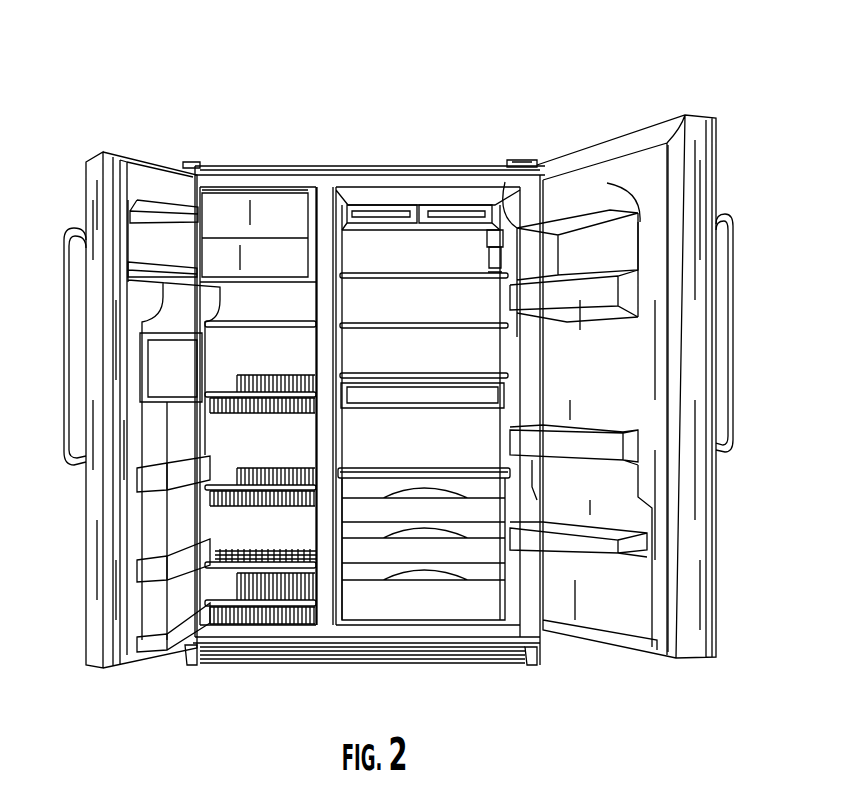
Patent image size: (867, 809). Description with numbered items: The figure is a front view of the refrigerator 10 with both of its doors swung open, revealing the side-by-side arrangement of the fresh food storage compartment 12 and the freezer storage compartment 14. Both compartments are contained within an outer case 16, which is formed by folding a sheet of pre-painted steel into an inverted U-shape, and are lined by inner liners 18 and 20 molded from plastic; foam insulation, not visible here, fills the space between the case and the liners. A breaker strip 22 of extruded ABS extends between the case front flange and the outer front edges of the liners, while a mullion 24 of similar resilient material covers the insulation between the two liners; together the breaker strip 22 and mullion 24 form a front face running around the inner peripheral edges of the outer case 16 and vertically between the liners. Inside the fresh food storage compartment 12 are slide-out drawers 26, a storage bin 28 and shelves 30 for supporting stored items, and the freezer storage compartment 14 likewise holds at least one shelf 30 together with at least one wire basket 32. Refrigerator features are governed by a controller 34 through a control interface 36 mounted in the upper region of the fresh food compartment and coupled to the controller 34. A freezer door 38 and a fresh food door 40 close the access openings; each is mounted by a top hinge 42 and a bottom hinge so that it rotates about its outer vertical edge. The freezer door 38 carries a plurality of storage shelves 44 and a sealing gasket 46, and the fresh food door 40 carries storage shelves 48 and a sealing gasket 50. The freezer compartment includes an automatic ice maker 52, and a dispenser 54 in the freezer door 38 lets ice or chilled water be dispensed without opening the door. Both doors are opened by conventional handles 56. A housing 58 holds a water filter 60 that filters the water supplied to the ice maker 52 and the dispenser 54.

The refrigerator 10 is at (522, 60).
The fresh food storage compartment 12 is at (401, 190).
The freezer storage compartment 14 is at (284, 203).
The outer case 16 is at (350, 167).
The inner liner 18 is at (504, 347).
The inner liner 20 is at (213, 583).
The breaker strip 22 is at (488, 173).
The mullion 24 is at (322, 457).
The slide-out drawers 26 is at (488, 507).
The storage bin 28 is at (411, 611).
The shelves 30 is at (297, 323).
The wire basket 32 is at (267, 395).
The controller 34 is at (423, 215).
The control interface 36 is at (370, 215).
The freezer door 38 is at (80, 207).
The fresh food door 40 is at (722, 147).
The top hinge 42 is at (194, 162).
The storage shelves 44 is at (137, 478).
The sealing gasket 46 is at (113, 598).
The storage shelves 48 is at (592, 558).
The sealing gasket 50 is at (678, 238).
The automatic ice maker 52 is at (267, 271).
The dispenser 54 is at (150, 385).
The handles 56 is at (69, 318).
The housing 58 is at (507, 240).
The water filter 60 is at (502, 265).